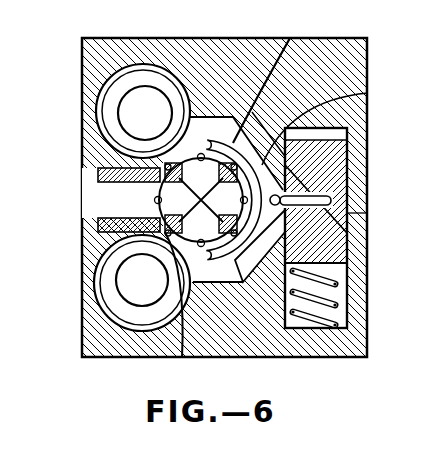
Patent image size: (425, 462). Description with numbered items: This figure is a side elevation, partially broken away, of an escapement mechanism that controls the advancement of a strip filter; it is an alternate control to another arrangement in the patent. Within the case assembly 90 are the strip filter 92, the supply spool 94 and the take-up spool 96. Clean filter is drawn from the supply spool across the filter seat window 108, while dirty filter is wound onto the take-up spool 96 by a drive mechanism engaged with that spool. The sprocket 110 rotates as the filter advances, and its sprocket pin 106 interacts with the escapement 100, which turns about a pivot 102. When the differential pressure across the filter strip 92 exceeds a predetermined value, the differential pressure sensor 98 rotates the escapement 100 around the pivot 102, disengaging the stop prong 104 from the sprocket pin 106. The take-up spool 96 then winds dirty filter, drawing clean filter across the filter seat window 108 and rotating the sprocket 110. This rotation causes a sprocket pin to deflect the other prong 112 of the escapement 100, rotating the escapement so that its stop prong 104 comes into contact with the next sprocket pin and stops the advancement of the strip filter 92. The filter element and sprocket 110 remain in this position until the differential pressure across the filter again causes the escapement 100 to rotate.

The case assembly 90 is at (247, 38).
The strip filter 92 is at (165, 156).
The supply spool 94 is at (142, 86).
The take-up spool 96 is at (118, 298).
The differential pressure sensor 98 is at (348, 150).
The escapement 100 is at (368, 93).
The pivot 102 is at (332, 210).
The stop prong 104 is at (268, 357).
The sprocket pin 106 is at (193, 242).
The filter seat window 108 is at (108, 205).
The sprocket 110 is at (183, 357).
The other prong 112 is at (292, 37).